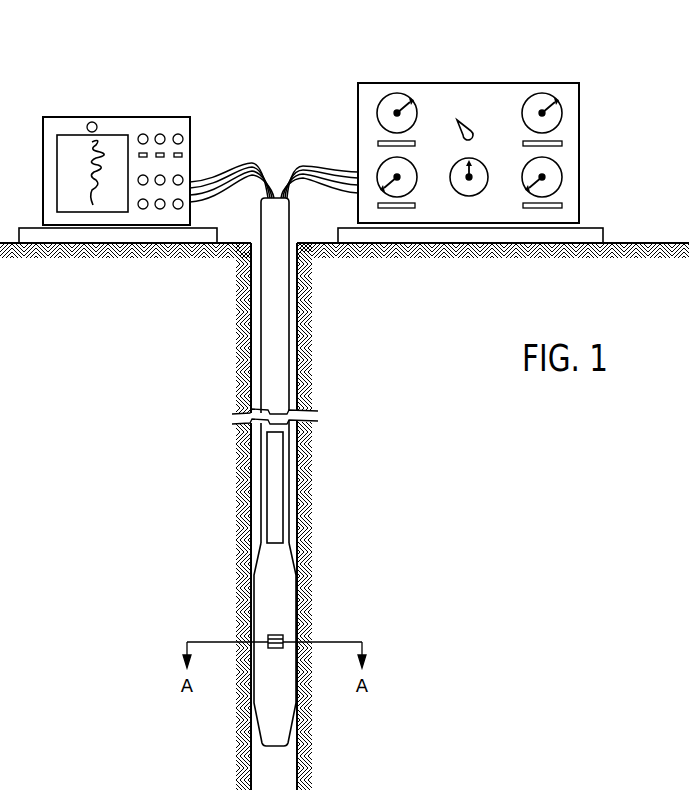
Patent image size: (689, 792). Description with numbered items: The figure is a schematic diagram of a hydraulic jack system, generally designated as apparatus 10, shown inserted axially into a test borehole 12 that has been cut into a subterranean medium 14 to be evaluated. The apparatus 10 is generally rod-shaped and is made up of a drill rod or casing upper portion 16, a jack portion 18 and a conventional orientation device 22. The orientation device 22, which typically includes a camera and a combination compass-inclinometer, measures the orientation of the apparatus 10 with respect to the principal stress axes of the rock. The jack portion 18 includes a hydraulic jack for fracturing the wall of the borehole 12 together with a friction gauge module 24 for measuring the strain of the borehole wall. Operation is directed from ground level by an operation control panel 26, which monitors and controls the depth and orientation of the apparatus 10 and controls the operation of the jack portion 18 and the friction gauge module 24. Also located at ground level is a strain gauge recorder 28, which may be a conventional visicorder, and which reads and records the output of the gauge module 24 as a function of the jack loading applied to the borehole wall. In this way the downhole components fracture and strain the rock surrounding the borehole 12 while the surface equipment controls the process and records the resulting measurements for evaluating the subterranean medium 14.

The apparatus 10 is at (212, 391).
The test borehole 12 is at (296, 246).
The subterranean medium 14 is at (174, 296).
The drill rod or casing upper portion 16 is at (270, 336).
The jack portion 18 is at (276, 574).
The orientation device 22 is at (276, 472).
The friction gauge module 24 is at (277, 636).
The operation control panel 26 is at (491, 103).
The strain gauge recorder 28 is at (116, 125).